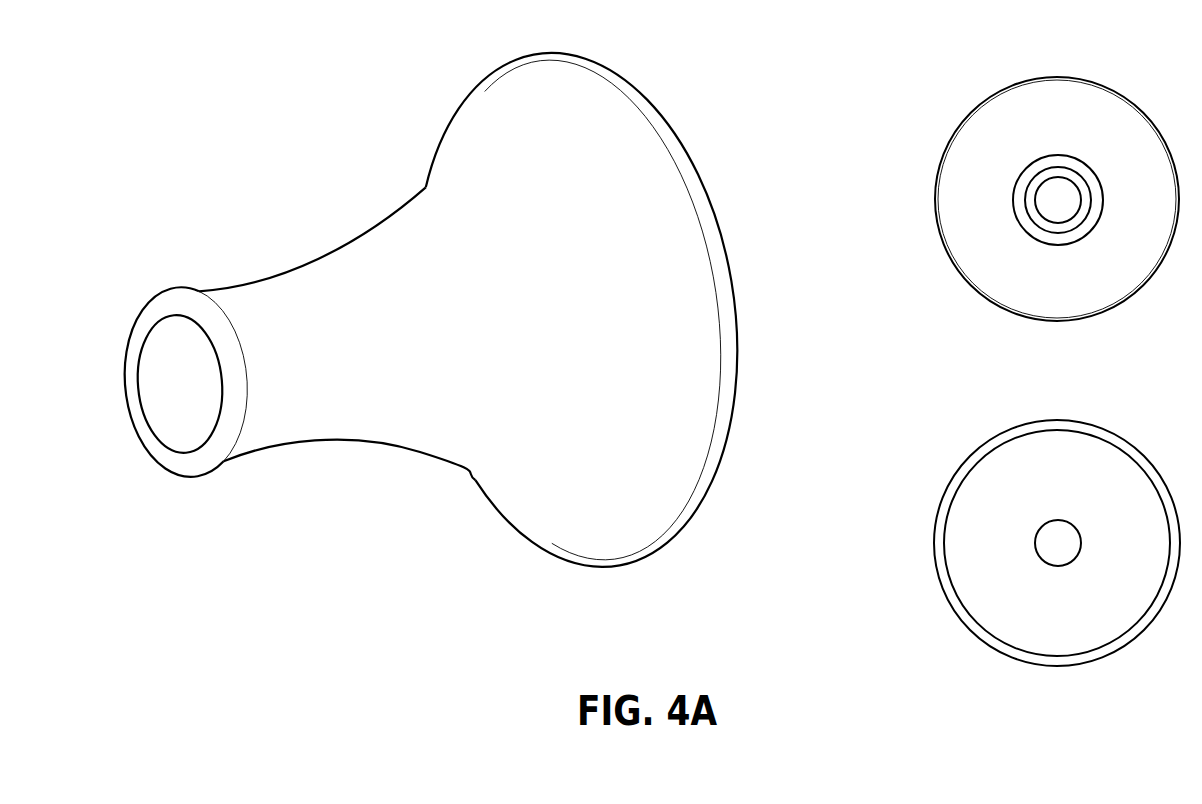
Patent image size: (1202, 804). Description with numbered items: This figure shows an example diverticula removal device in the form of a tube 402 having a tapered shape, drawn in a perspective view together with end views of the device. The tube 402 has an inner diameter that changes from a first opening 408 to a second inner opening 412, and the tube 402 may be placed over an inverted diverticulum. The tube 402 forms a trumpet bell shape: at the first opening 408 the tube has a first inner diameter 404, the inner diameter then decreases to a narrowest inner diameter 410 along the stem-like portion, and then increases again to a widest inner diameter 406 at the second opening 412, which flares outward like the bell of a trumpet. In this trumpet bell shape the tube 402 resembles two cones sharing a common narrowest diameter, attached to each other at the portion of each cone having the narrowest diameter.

The tube 402 is at (313, 79).
The first inner diameter 404 is at (140, 294).
The widest inner diameter 406 is at (549, 41).
The first opening 408 is at (196, 407).
The narrowest inner diameter 410 is at (280, 272).
The second opening 412 is at (766, 269).